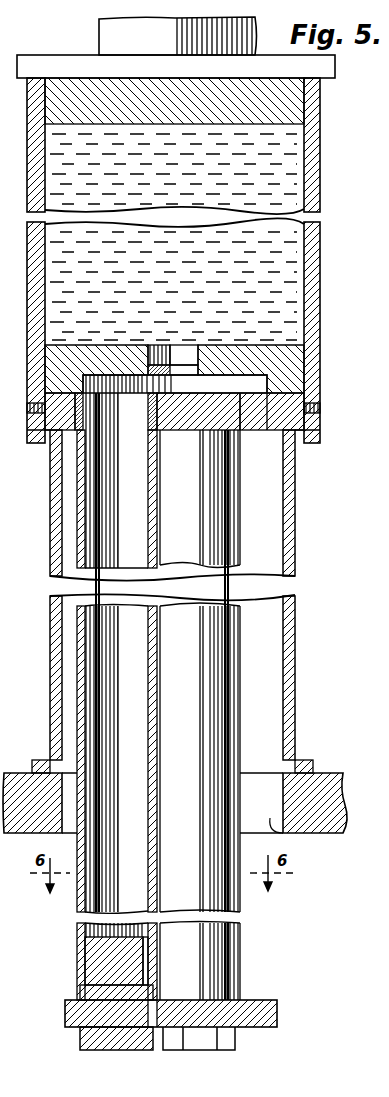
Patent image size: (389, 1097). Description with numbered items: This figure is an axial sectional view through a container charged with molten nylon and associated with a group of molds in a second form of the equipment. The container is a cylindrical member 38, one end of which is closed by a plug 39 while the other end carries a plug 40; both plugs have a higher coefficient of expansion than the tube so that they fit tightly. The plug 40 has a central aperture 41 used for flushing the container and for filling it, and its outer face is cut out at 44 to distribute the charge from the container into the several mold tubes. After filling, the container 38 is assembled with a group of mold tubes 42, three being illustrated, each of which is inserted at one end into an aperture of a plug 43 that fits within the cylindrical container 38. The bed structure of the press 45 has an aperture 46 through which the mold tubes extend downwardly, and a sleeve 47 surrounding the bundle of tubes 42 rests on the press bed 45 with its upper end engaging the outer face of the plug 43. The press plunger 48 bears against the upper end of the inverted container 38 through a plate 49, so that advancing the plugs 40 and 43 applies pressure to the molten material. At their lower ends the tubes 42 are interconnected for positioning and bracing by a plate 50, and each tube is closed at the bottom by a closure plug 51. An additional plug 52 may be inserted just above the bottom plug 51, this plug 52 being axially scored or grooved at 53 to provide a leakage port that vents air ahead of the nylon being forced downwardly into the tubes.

The cylindrical member 38 is at (312, 180).
The plug 39 is at (283, 100).
The plug 40 is at (285, 352).
The central aperture 41 is at (185, 357).
The mold tubes 42 is at (78, 900).
The plug 43 is at (266, 432).
The cut out 44 is at (250, 381).
The bed structure of the press 45 is at (320, 780).
The aperture 46 is at (283, 834).
The sleeve 47 is at (283, 640).
The press plunger 48 is at (99, 37).
The plate 49 is at (335, 65).
The plate 50 is at (265, 1000).
The closure plug 51 is at (120, 1047).
The plug 52 is at (95, 963).
The axial score or groove 53 is at (148, 975).